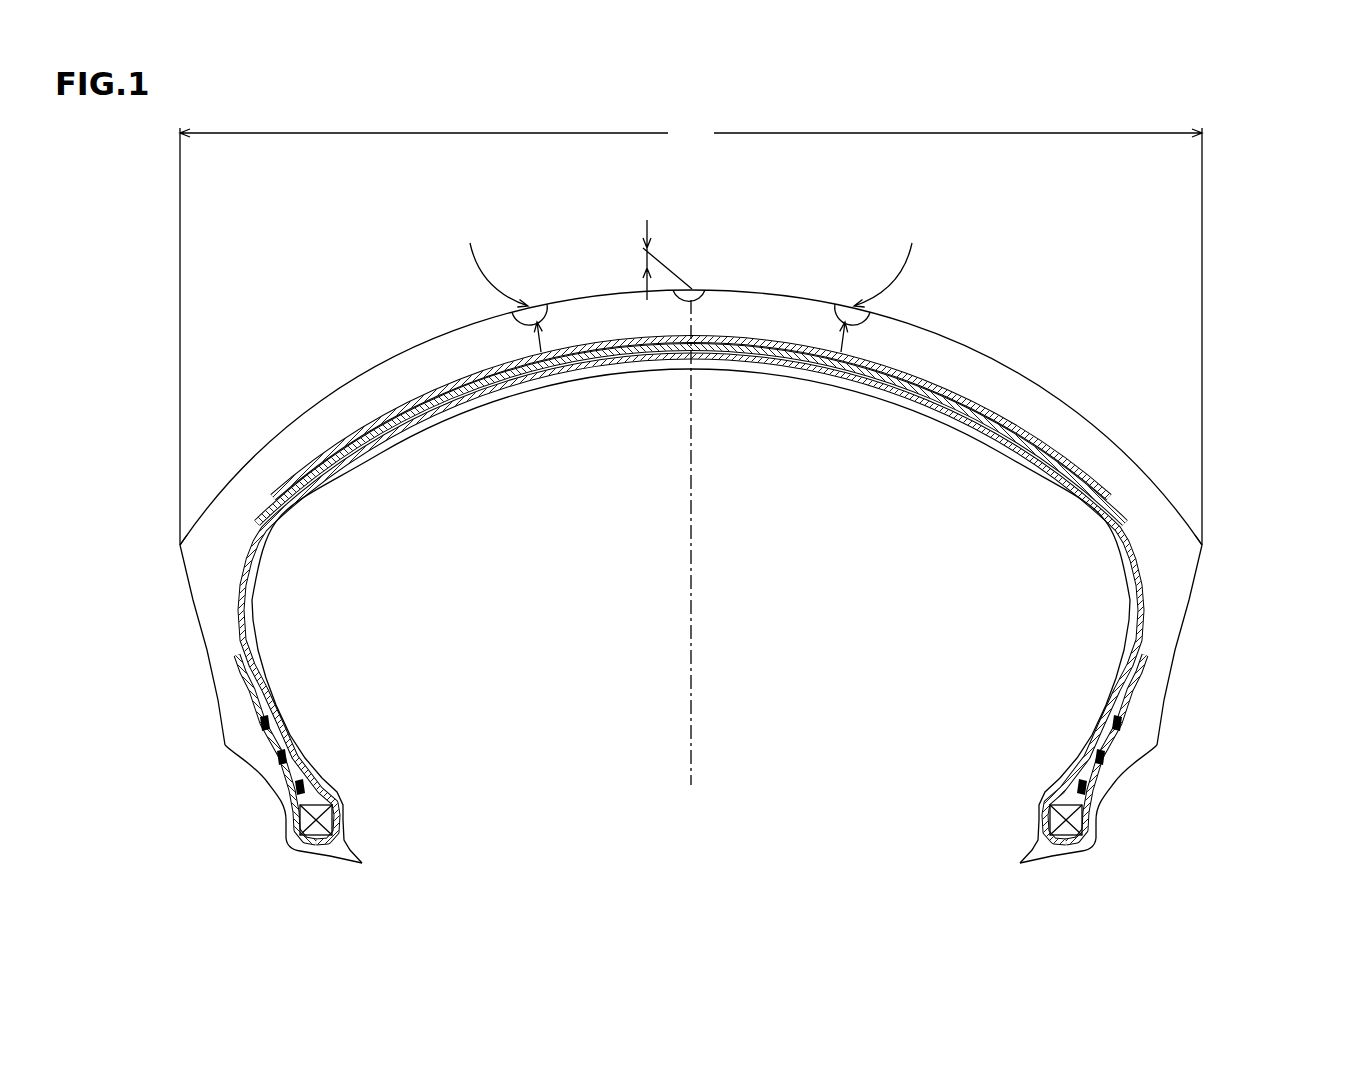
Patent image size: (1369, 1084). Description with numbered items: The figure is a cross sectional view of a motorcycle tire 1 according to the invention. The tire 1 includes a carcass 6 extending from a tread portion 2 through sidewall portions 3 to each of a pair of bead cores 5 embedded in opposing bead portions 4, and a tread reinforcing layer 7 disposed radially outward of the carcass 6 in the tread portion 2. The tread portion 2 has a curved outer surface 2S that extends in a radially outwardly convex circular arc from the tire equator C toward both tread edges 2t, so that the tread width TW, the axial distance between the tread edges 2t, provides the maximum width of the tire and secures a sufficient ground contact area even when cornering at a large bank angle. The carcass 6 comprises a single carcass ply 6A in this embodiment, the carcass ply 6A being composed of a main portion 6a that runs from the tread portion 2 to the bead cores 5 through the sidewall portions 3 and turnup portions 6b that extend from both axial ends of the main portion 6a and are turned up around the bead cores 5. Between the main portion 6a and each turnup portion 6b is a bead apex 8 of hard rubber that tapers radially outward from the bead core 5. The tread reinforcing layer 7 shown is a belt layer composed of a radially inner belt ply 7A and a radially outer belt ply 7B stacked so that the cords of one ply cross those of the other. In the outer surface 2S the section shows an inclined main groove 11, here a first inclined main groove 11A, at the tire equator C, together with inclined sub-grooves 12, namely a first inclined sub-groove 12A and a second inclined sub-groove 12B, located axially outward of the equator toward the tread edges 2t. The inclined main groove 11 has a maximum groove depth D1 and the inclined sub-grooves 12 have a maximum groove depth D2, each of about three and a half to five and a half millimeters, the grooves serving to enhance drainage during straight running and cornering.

The motorcycle tire 1 is at (703, 496).
The tread portion 2 is at (691, 347).
The outer surface 2S is at (1089, 389).
The tread edge 2t is at (179, 544).
The sidewall portion 3 is at (182, 667).
The bead portion 4 is at (689, 793).
The bead core 5 is at (330, 822).
The carcass 6 is at (691, 599).
The carcass ply 6A is at (691, 599).
The main portion 6a is at (1138, 610).
The turnup portion 6b is at (1135, 667).
The tread reinforcing layer 7 is at (691, 446).
The inner belt ply 7A is at (870, 373).
The outer belt ply 7B is at (800, 353).
The bead apex 8 is at (297, 773).
The inclined main groove 11 is at (739, 225).
The first inclined main groove 11A is at (704, 289).
The inclined sub-groove 12 is at (691, 254).
The first inclined sub-groove 12A is at (852, 314).
The second inclined sub-groove 12B is at (529, 314).
The maximum groove depth D1 is at (648, 260).
The maximum groove depth D2 is at (688, 286).
The tread width TW is at (691, 333).
The tire equator C is at (690, 512).